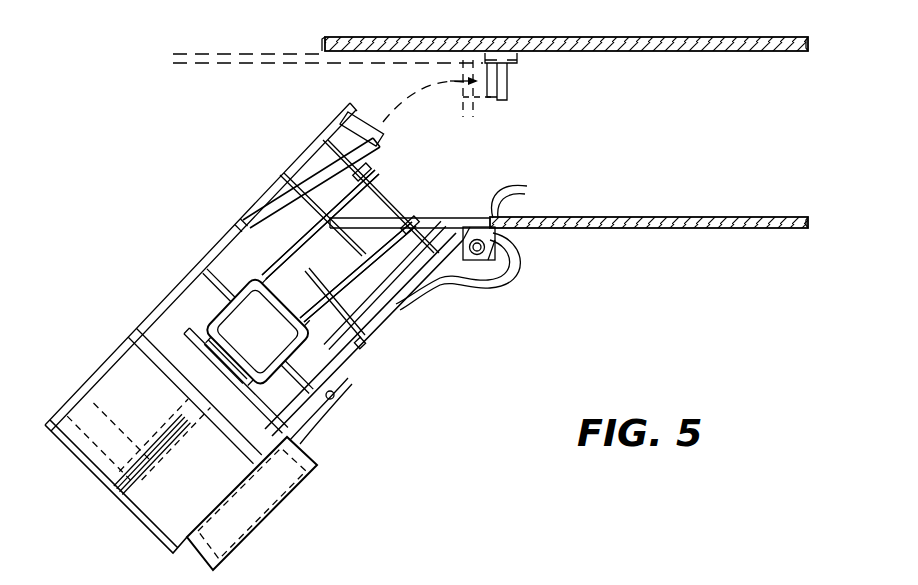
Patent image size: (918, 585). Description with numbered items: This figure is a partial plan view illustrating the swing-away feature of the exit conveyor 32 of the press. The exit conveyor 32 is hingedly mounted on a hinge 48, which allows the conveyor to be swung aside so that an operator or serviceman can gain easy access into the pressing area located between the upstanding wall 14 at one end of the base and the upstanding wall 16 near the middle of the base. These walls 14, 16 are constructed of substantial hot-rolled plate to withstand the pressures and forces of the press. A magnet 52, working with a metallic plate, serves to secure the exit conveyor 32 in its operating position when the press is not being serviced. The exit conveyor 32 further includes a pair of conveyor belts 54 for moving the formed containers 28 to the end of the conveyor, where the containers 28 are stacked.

The upstanding wall 14 is at (666, 217).
The upstanding wall 16 is at (738, 52).
The container 28 is at (205, 325).
The exit conveyor 32 is at (386, 430).
The hinge 48 is at (470, 262).
The magnet 52 is at (497, 80).
The conveyor belts 54 is at (307, 233).